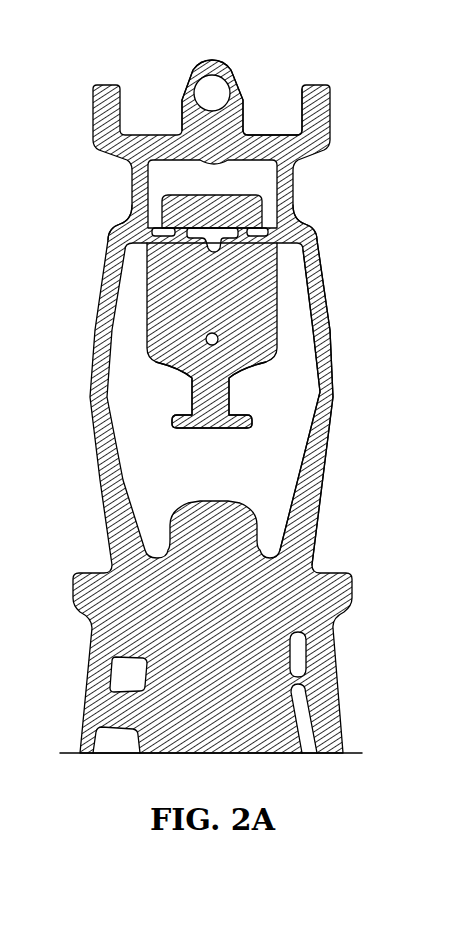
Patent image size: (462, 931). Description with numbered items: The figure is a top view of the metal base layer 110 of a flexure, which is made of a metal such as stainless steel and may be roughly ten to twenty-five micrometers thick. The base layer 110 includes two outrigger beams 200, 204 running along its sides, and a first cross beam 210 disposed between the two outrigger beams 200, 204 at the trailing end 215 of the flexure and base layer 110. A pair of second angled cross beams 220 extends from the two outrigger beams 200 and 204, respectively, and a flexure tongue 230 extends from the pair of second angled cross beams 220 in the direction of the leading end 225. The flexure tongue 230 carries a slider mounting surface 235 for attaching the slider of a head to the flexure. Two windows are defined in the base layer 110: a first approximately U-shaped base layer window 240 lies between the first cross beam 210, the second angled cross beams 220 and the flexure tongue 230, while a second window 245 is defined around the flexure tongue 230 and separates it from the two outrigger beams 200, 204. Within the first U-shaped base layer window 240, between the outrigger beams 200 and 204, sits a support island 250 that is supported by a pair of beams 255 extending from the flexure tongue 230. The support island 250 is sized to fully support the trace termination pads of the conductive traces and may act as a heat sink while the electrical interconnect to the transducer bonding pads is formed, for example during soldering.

The base layer 110 is at (110, 307).
The outrigger beam 200 is at (102, 390).
The outrigger beam 204 is at (323, 338).
The first cross beam 210 is at (270, 135).
The trailing end 215 is at (312, 57).
The second angled cross beams 220 is at (152, 229).
The leading end 225 is at (342, 772).
The flexure tongue 230 is at (273, 358).
The slider mounting surface 235 is at (160, 335).
The first U-shaped base layer window 240 is at (266, 176).
The second window 245 is at (297, 318).
The support island 250 is at (252, 203).
The beams 255 is at (132, 242).